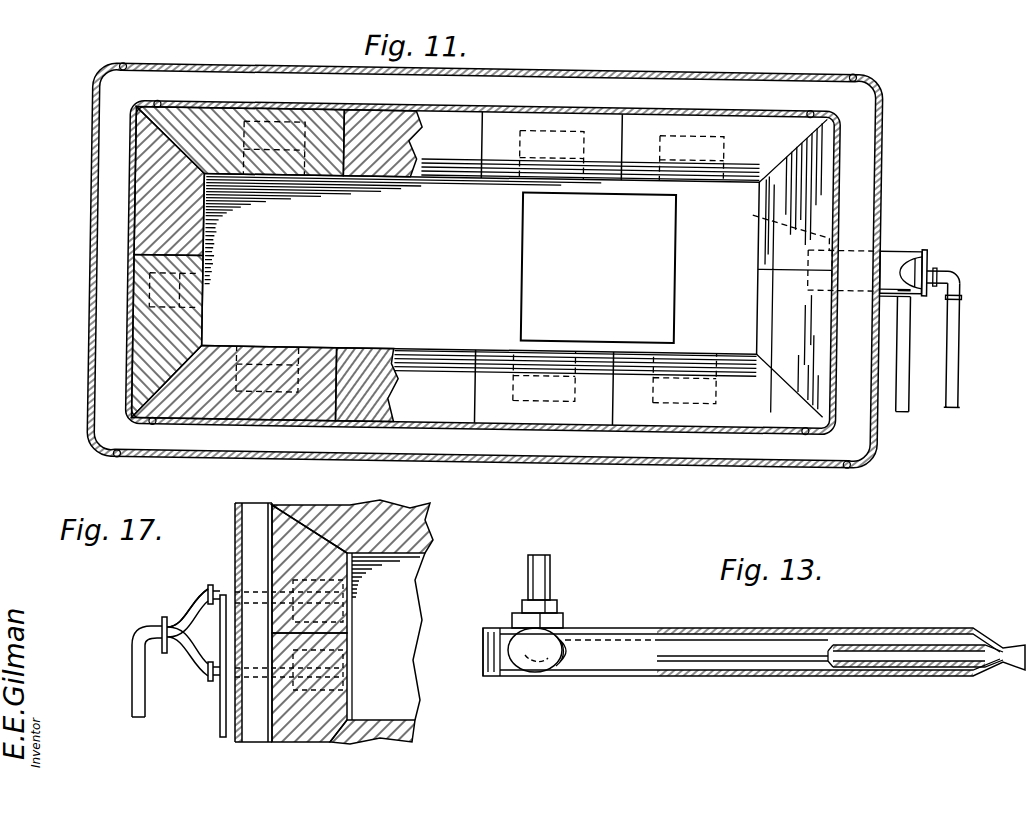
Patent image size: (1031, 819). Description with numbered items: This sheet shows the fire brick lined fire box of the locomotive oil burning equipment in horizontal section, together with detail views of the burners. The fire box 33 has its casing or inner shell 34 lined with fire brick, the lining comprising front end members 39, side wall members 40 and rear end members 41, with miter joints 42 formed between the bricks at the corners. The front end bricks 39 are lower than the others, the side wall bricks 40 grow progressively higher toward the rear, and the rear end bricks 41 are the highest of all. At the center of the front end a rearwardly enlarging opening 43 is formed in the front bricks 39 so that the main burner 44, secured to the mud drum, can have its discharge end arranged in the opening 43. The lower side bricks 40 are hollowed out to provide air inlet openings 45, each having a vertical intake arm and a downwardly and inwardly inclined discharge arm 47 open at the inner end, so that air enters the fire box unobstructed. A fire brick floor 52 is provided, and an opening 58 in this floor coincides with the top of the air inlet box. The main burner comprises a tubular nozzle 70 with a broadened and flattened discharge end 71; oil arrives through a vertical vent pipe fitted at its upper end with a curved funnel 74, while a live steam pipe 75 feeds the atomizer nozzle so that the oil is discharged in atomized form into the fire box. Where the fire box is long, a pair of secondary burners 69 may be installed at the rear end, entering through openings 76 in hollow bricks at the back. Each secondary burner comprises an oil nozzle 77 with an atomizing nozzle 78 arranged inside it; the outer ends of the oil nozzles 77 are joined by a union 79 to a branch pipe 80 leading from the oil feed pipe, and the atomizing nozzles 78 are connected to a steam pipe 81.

In FIG. 11, the fire box 33 is at (883, 144).
In FIG. 11, the casing or inner shell 34 is at (636, 426).
In FIG. 11, the front end members 39 is at (824, 180).
In FIG. 11, the side wall members 40 is at (473, 174).
In FIG. 11, the rear end members 41 is at (205, 260).
In FIG. 11, the miter joints 42 is at (168, 137).
In FIG. 11, the rearwardly enlarging opening 43 is at (760, 226).
In FIG. 11, the burner 44 is at (905, 251).
In FIG. 11, the air inlet openings 45 is at (543, 129).
In FIG. 11, the discharge arm 47 is at (269, 352).
In FIG. 11, the fire brick floor 52 is at (481, 264).
In FIG. 11, the opening 58 is at (522, 256).
In FIG. 17, the secondary burners 69 is at (211, 590).
In FIG. 13, the secondary burners 69 is at (604, 673).
In FIG. 11, the tubular nozzle 70 is at (896, 291).
In FIG. 11, the broadened and flattened discharge end 71 is at (808, 280).
In FIG. 11, the curved funnel 74 is at (928, 263).
In FIG. 11, the live steam pipe 75 is at (956, 337).
In FIG. 17, the openings 76 is at (297, 507).
In FIG. 17, the oil nozzle 77 is at (256, 679).
In FIG. 13, the oil nozzle 77 is at (855, 630).
In FIG. 13, the atomizing nozzle 78 is at (806, 661).
In FIG. 17, the union 79 is at (184, 665).
In FIG. 17, the branch pipe 80 is at (132, 687).
In FIG. 17, the steam pipe 81 is at (218, 729).
In FIG. 13, the steam pipe 81 is at (552, 566).